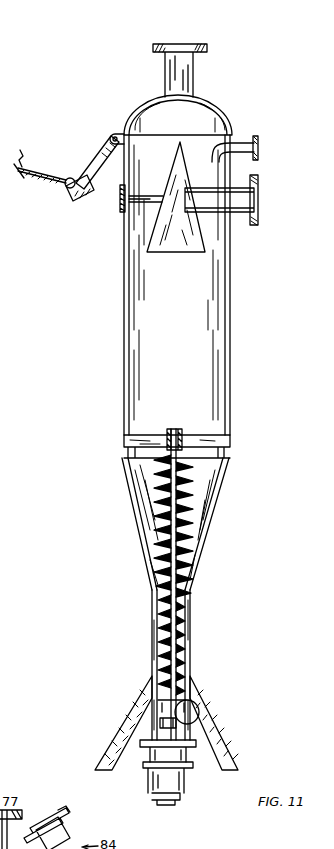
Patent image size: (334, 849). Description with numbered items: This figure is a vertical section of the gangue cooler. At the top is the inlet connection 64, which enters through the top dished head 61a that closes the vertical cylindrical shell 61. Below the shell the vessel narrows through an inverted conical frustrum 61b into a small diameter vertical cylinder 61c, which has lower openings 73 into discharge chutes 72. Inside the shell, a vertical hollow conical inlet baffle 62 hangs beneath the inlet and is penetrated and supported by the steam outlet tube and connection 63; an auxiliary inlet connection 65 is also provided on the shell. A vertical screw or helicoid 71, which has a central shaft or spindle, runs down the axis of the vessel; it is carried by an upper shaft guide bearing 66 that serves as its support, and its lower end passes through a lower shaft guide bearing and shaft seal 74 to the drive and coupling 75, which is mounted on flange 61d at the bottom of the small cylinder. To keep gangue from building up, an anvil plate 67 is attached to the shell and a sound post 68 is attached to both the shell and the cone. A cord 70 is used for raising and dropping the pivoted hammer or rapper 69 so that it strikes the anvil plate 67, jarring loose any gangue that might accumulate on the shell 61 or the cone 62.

The vertical cylindrical shell 61 is at (232, 305).
The top dished head 61a is at (233, 116).
The inverted conical frustrum 61b is at (212, 534).
The small diameter vertical cylinder 61c is at (192, 627).
The flange 61d is at (194, 740).
The vertical hollow conical inlet baffle 62 is at (174, 152).
The steam outlet tube and connection 63 is at (262, 205).
The inlet connection 64 is at (182, 46).
The auxiliary inlet connection 65 is at (262, 150).
The upper shaft guide bearing 66 is at (205, 433).
The anvil plate 67 is at (118, 211).
The sound post 68 is at (145, 199).
The pivoted hammer or rapper 69 is at (80, 202).
The cord 70 is at (40, 183).
The vertical screw or helicoid 71 is at (183, 478).
The discharge chutes 72 is at (122, 720).
The lower openings 73 is at (186, 692).
The lower shaft guide bearing and shaft seal 74 is at (200, 706).
The drive and coupling 75 is at (192, 768).